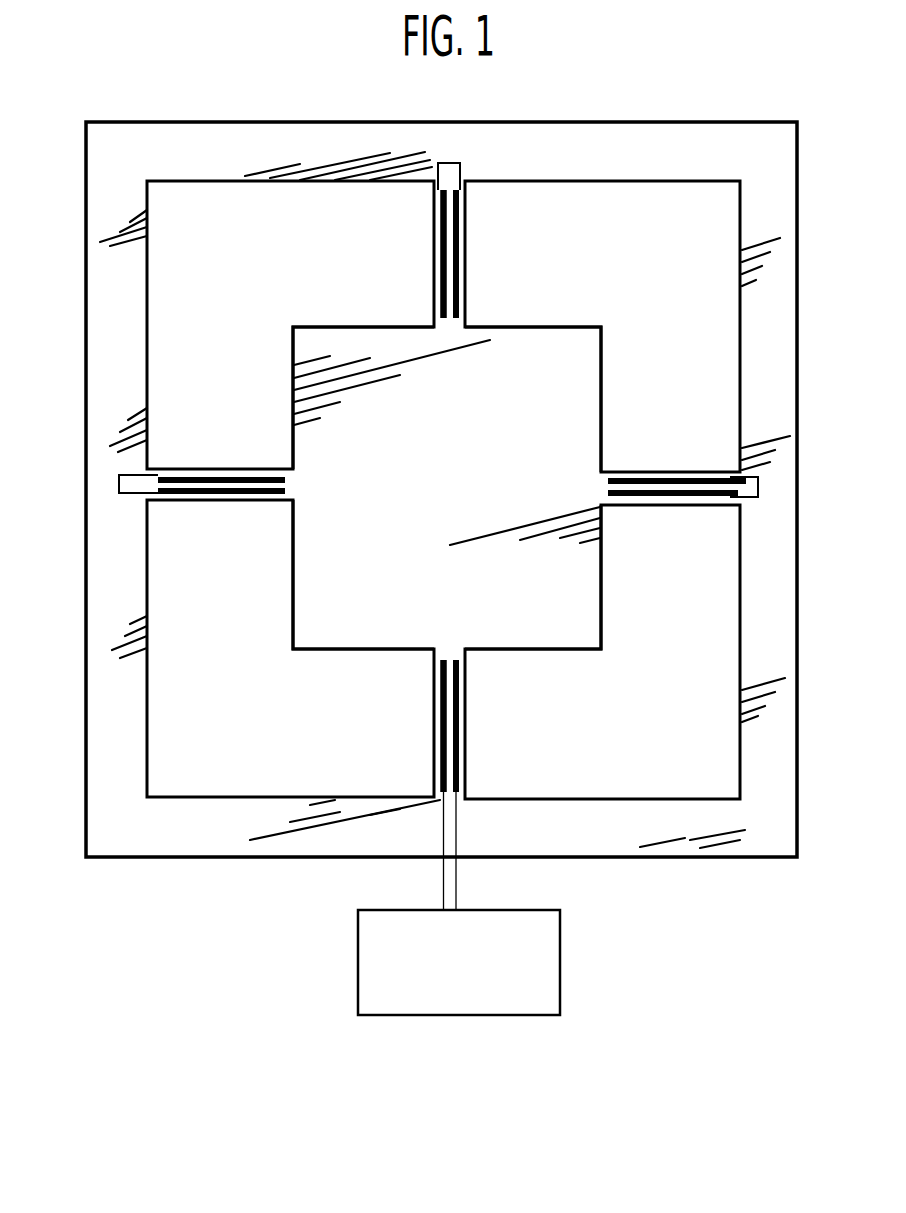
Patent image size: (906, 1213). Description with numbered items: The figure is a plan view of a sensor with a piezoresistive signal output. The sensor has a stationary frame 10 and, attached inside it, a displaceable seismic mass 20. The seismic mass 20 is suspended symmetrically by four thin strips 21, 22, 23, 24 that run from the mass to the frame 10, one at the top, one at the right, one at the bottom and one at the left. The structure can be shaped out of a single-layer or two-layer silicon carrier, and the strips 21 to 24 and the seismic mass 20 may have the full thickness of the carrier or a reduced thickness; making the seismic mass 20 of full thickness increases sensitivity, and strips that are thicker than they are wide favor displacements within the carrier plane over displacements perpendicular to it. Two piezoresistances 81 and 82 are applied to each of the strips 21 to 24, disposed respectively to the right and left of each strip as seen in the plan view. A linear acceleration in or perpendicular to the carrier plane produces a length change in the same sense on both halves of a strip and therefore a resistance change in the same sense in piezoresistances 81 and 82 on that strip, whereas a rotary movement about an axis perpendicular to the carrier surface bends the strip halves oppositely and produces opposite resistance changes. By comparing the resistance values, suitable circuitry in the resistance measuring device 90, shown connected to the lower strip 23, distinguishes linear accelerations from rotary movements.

The stationary frame 10 is at (597, 838).
The seismic mass 20 is at (487, 489).
The strip 21 is at (462, 212).
The strip 22 is at (683, 474).
The strip 23 is at (466, 750).
The strip 24 is at (218, 500).
The piezoresistance 81 is at (441, 266).
The piezoresistance 82 is at (458, 272).
The device 90 is at (358, 972).